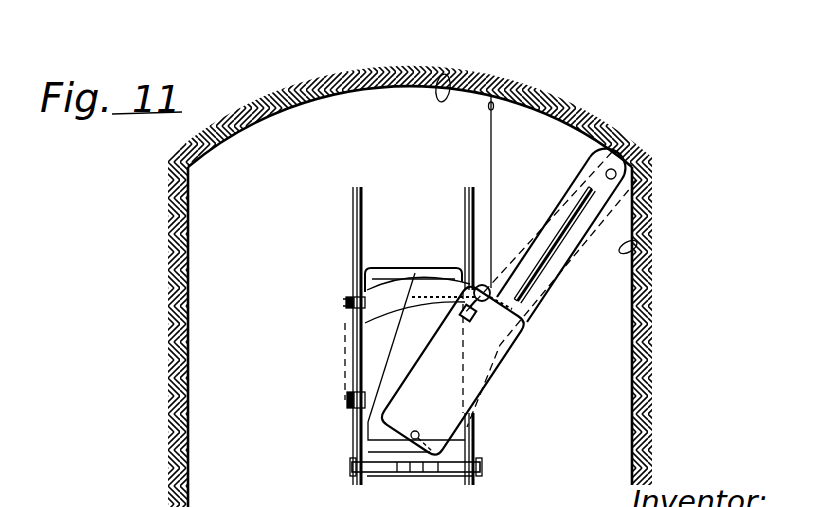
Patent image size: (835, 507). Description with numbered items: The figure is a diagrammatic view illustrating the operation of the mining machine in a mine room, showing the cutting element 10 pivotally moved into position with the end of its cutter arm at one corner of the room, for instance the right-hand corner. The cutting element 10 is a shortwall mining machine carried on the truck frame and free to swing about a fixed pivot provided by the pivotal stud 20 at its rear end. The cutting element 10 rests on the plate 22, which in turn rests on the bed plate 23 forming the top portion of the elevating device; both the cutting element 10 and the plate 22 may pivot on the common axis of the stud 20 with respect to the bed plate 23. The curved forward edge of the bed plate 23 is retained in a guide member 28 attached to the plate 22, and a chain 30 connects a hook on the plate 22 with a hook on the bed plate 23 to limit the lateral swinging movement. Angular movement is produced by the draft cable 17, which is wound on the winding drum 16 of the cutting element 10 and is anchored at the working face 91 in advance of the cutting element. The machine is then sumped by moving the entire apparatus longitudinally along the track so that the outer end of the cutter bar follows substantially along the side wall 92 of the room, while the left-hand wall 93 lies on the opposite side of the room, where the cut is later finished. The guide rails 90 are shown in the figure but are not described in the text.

The cutting element 10 is at (546, 422).
The winding drum 16 is at (353, 327).
The draft cable 17 is at (493, 187).
The pivotal stud 20 is at (433, 472).
The plate 22 is at (415, 321).
The bed plate 23 is at (418, 292).
The guide member 28 is at (485, 302).
The chain 30 is at (442, 295).
The guide rails 90 is at (353, 243).
The working face 91 is at (445, 74).
The side wall 92 is at (637, 245).
The left-hand wall 93 is at (192, 323).